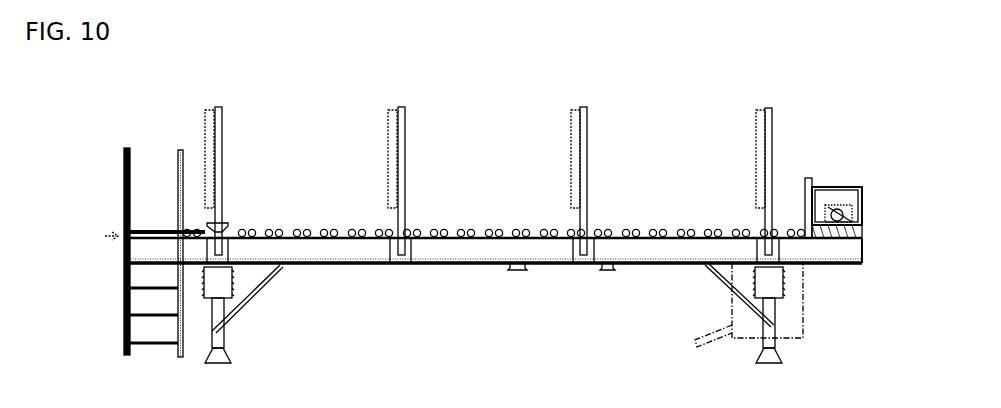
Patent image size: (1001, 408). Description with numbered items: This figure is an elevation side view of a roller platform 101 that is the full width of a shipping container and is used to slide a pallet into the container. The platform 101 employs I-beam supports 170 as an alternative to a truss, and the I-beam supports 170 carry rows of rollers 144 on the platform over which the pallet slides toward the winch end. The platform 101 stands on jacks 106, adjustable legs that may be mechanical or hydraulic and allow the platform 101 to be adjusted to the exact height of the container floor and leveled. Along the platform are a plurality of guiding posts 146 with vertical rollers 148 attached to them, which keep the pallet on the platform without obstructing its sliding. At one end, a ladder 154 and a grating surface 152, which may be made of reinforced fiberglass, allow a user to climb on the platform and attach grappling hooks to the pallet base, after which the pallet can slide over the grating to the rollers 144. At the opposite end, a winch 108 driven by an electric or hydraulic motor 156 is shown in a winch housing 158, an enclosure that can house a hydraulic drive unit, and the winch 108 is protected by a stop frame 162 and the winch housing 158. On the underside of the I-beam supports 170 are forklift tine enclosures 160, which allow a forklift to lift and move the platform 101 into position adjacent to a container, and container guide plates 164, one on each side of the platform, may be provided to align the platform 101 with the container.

The platform 101 is at (415, 223).
The jacks 106 is at (227, 353).
The winch 108 is at (847, 212).
The rollers 144 is at (637, 230).
The guiding posts 146 is at (403, 123).
The vertical rollers 148 is at (393, 145).
The grating surface 152 is at (143, 230).
The ladder 154 is at (125, 333).
The motor 156 is at (803, 307).
The winch housing 158 is at (855, 182).
The forklift tine enclosures 160 is at (608, 270).
The stop frame 162 is at (810, 178).
The container guide plates 164 is at (115, 245).
The I-beam supports 170 is at (318, 252).